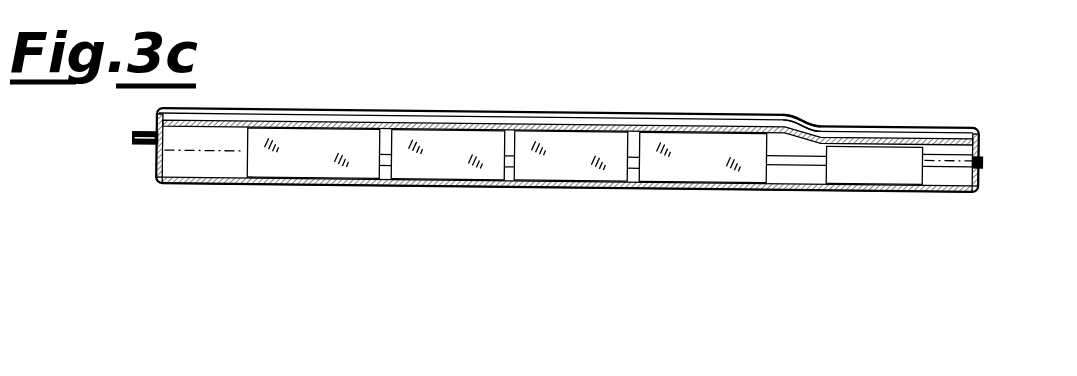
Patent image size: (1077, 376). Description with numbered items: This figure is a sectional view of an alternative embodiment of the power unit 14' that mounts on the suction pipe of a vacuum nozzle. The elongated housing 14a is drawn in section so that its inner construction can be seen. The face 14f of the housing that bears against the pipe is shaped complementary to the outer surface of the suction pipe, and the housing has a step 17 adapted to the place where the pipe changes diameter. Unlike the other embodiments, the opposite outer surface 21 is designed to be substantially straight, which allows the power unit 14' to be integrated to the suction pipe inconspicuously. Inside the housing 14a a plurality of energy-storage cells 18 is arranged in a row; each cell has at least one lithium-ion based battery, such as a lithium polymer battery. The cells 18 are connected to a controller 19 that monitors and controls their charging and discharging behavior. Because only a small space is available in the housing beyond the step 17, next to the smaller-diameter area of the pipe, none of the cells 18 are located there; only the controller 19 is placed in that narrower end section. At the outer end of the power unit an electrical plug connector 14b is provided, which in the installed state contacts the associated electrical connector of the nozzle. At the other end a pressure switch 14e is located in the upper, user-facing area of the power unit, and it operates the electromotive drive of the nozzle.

The power unit 14' is at (566, 80).
The housing 14a is at (211, 184).
The electrical plug connector 14b is at (122, 150).
The pressure switch 14e is at (985, 162).
The face 14f is at (449, 115).
The step 17 is at (805, 107).
The energy-storage cells 18 is at (473, 172).
The controller 19 is at (866, 172).
The opposite outer surface 21 is at (664, 200).